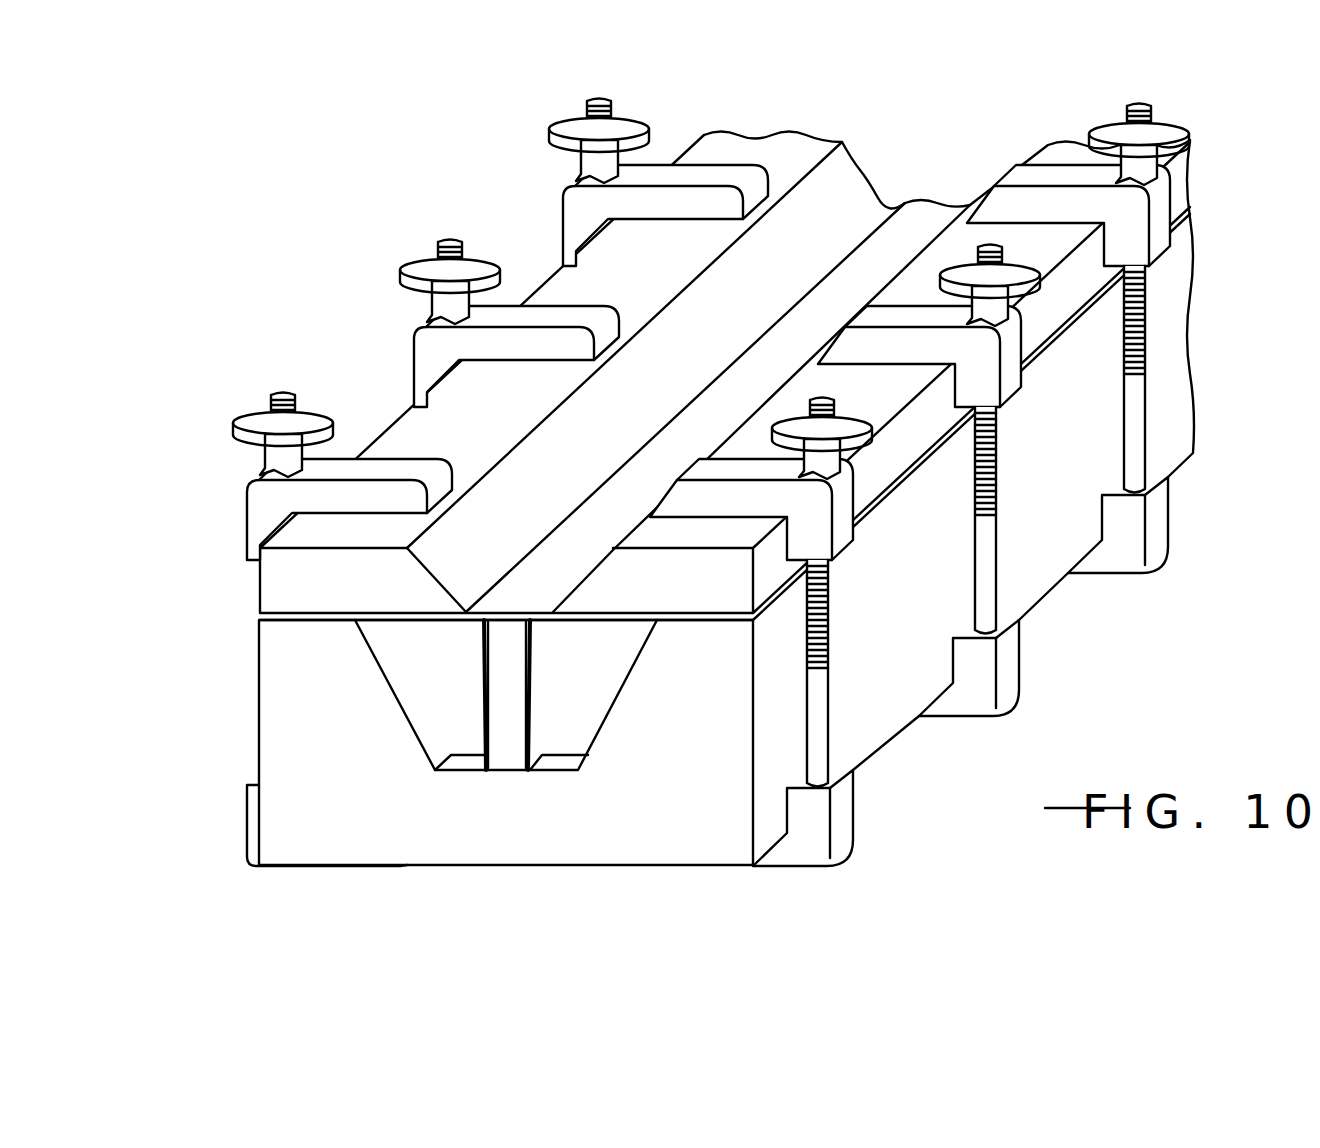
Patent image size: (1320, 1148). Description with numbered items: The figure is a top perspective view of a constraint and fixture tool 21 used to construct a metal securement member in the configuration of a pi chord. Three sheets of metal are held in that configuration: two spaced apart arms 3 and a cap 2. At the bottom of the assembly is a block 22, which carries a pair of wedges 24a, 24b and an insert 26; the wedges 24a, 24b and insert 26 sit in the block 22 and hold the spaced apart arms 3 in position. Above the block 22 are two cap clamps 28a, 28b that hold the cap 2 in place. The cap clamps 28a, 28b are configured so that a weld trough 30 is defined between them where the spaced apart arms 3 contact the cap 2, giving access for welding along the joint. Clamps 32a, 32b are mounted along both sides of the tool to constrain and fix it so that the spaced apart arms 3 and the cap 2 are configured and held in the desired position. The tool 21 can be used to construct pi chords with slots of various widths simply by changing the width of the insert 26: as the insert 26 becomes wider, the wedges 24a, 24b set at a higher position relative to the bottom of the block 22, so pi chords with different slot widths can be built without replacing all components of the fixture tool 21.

The cap 2 is at (717, 415).
The spaced apart arms 3 is at (482, 668).
The constraint and fixture tool 21 is at (224, 699).
The block 22 is at (550, 865).
The wedge 24a is at (415, 685).
The wedge 24b is at (572, 698).
The insert 26 is at (502, 747).
The cap clamp 28a is at (254, 578).
The cap clamp 28b is at (760, 580).
The weld trough 30 is at (570, 455).
The clamp 32a is at (563, 190).
The clamp 32b is at (840, 532).